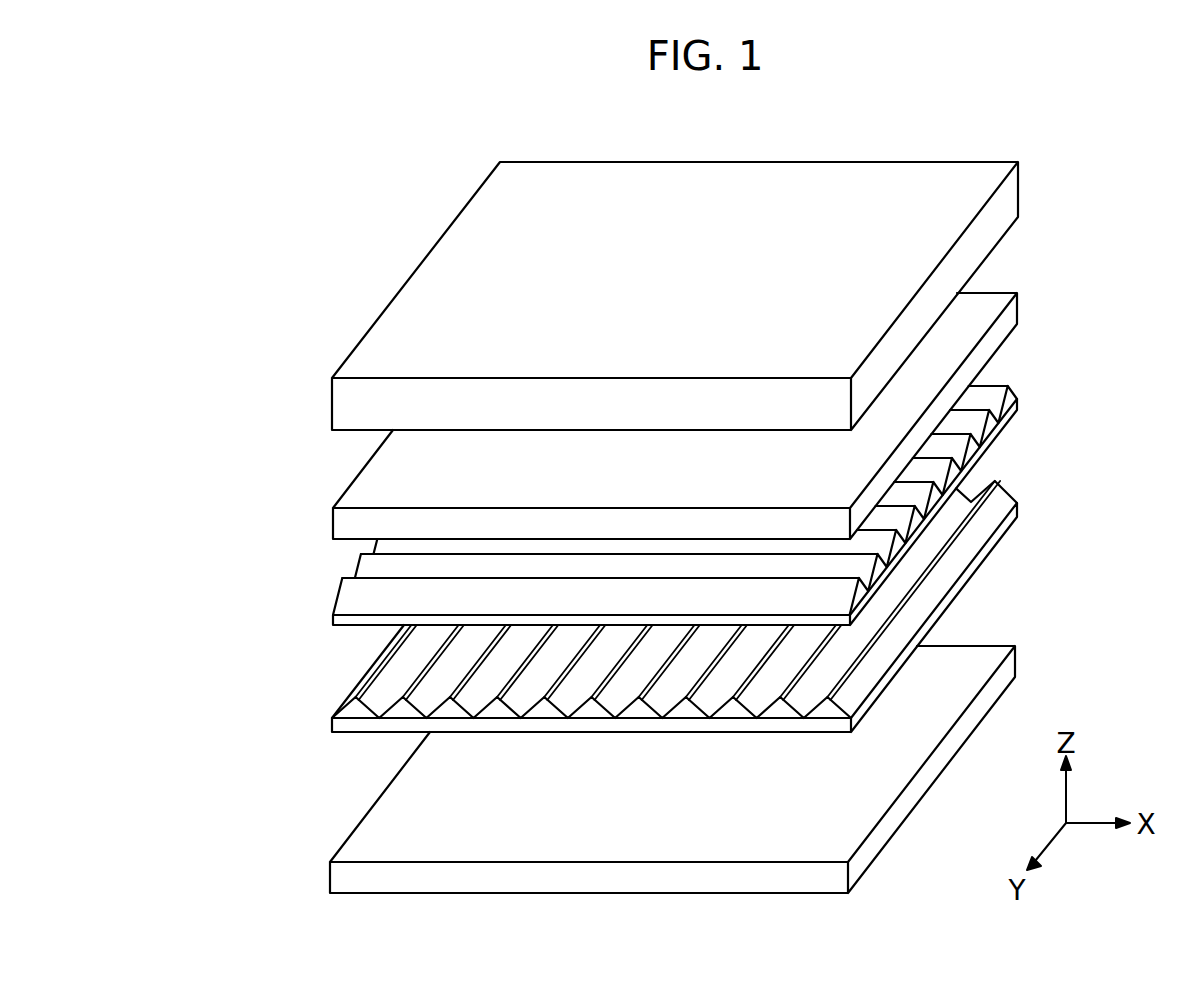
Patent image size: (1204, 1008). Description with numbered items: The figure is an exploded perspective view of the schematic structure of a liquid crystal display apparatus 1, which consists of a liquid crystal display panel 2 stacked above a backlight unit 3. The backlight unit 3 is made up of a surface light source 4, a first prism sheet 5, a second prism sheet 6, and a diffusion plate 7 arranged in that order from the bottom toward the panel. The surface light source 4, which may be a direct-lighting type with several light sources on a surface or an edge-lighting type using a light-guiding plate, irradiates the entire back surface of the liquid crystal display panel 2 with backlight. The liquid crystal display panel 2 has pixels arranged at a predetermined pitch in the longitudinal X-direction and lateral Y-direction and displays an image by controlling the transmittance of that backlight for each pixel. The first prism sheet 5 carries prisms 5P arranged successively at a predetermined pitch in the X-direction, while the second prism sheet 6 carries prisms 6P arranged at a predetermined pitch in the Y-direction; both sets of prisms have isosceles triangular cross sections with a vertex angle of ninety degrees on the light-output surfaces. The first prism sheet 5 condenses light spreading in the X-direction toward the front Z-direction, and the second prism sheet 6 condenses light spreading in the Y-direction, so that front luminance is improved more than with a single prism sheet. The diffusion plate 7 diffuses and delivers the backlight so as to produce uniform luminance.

The liquid crystal display apparatus 1 is at (298, 199).
The liquid crystal display panel 2 is at (1007, 203).
The backlight unit 3 is at (312, 512).
The surface light source 4 is at (1008, 662).
The first prism sheet 5 is at (1010, 527).
The prisms 5P is at (757, 690).
The second prism sheet 6 is at (995, 433).
The prisms 6P is at (706, 566).
The diffusion plate 7 is at (1010, 315).